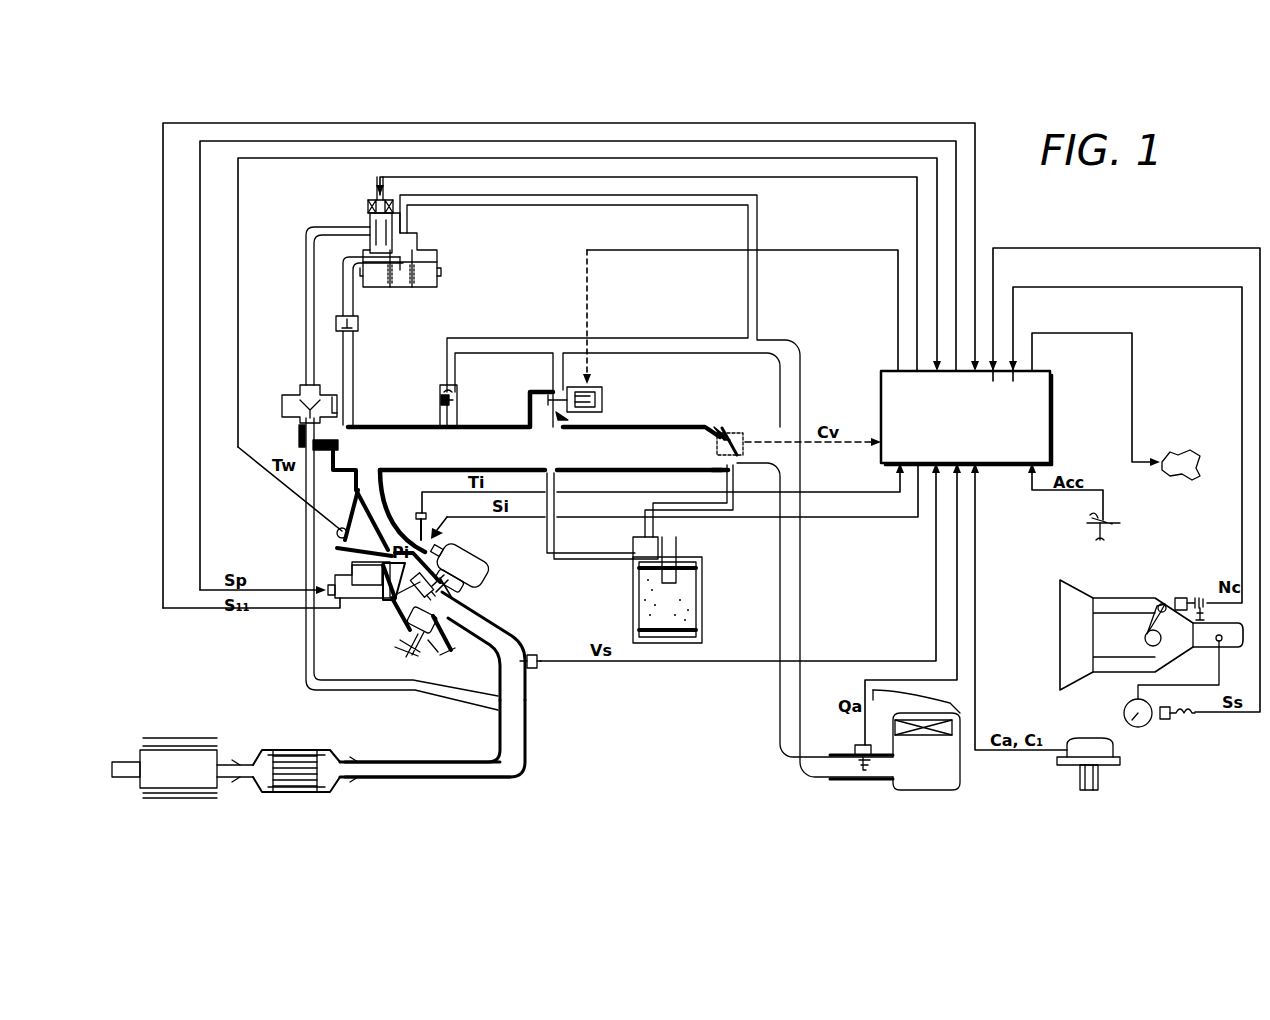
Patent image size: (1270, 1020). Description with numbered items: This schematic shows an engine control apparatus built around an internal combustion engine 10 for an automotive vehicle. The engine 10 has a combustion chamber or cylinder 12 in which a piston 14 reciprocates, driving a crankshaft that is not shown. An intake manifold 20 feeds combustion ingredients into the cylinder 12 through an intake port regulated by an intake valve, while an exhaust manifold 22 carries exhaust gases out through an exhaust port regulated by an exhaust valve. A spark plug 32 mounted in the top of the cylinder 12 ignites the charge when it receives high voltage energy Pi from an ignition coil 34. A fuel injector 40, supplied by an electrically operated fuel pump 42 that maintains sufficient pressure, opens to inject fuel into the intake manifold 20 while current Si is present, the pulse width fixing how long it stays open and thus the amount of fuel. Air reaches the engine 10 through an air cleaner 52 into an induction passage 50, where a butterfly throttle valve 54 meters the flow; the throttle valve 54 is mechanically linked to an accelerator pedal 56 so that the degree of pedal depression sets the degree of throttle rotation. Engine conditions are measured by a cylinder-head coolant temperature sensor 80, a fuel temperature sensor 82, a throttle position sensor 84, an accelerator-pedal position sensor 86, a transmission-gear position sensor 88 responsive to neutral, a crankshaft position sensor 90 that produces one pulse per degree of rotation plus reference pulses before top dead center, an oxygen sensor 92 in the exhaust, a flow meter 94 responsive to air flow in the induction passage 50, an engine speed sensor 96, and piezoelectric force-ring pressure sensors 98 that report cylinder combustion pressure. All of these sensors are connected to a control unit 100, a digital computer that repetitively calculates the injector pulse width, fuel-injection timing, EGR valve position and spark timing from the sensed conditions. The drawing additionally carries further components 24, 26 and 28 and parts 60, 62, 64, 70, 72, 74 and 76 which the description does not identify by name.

The internal combustion engine 10 is at (396, 640).
The cylinder 12 is at (445, 640).
The piston 14 is at (415, 650).
The intake manifold 20 is at (375, 486).
The exhaust manifold 22 is at (502, 633).
The exhaust pipe 24 is at (528, 740).
The catalytic converter 26 is at (305, 793).
The muffler 28 is at (205, 790).
The spark plug 32 is at (415, 592).
The ignition coil 34 is at (335, 570).
The fuel injector 40 is at (452, 534).
The fuel pump 42 is at (1190, 452).
The induction passage 50 is at (496, 426).
The air cleaner 52 is at (935, 745).
The butterfly throttle valve 54 is at (724, 444).
The accelerator pedal 56 is at (1108, 521).
The air control valve 60 is at (302, 390).
The solenoid valve 62 is at (418, 238).
The orifice 64 is at (360, 324).
The idle speed control valve 70 is at (608, 400).
The bypass valve 72 is at (438, 388).
The canister 74 is at (712, 610).
The transmission 76 is at (1125, 600).
The cylinder-head coolant temperature sensor 80 is at (337, 533).
The fuel temperature sensor 82 is at (417, 512).
The throttle position sensor 84 is at (745, 438).
The accelerator-pedal position sensor 86 is at (1098, 543).
The transmission-gear position sensor 88 is at (1181, 597).
The crankshaft position sensor 90 is at (1105, 765).
The oxygen sensor 92 is at (536, 655).
The flow meter 94 is at (855, 748).
The engine speed sensor 96 is at (1165, 720).
The pressure sensors 98 is at (445, 580).
The control unit 100 is at (880, 380).